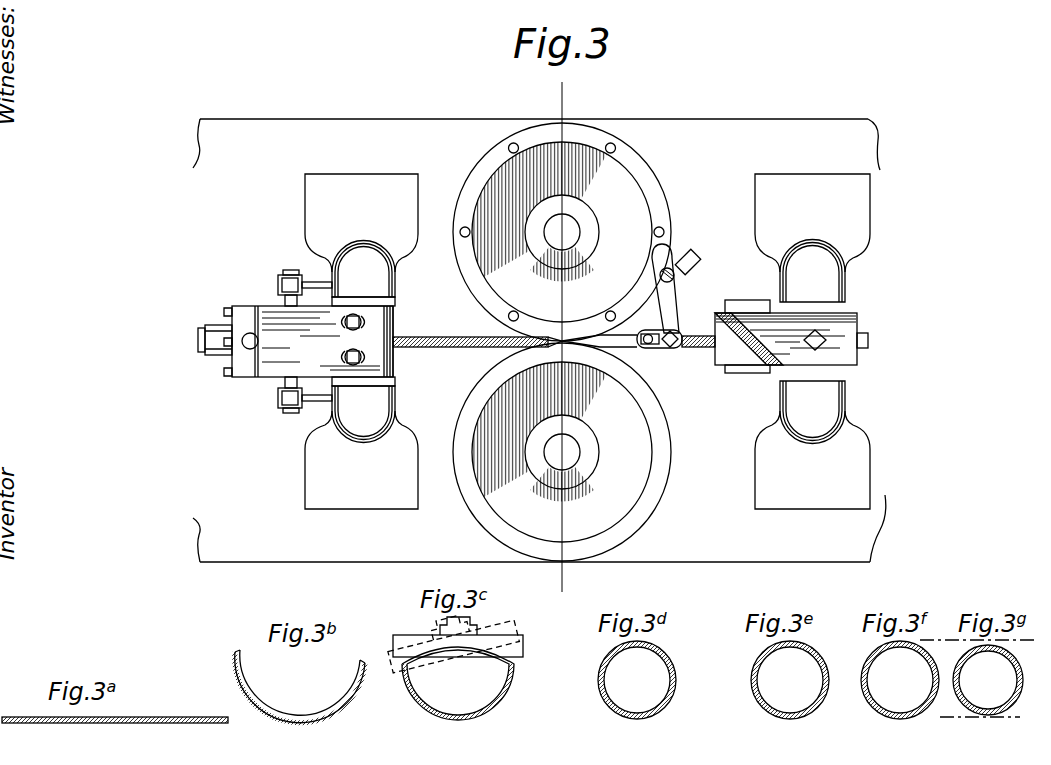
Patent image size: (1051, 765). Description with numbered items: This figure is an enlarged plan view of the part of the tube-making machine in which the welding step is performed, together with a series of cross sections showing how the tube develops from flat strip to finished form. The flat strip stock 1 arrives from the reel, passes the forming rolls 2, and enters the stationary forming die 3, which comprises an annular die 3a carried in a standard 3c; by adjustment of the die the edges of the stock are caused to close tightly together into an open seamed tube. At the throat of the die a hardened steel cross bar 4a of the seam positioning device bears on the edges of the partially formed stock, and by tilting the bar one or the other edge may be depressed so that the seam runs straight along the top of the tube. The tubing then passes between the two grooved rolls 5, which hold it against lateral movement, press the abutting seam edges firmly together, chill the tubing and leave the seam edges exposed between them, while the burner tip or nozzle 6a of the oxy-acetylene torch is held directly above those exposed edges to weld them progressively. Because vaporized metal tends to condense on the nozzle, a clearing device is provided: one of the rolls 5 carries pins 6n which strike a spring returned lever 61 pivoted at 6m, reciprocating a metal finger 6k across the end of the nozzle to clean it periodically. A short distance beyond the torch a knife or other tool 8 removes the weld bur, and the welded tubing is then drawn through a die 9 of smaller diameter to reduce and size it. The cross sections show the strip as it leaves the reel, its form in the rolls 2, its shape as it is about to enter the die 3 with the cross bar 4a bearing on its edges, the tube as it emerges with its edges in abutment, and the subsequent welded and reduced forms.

In FIG. 3, the flat strip stock 1 is at (210, 360).
In FIG. 3, the stationary forming die 3 is at (340, 341).
In FIG. 3, the annular die 3a is at (274, 372).
In FIG. 3, the standard 3c is at (330, 440).
In FIG. 3, the holding, pressing and chilling rolls 5 is at (660, 206).
In FIG. 3, the pins 6n is at (611, 153).
In FIG. 3, the pivot 6m is at (697, 258).
In FIG. 3, the spring returned lever 61 is at (673, 313).
In FIG. 3, the metal finger 6k is at (623, 343).
In FIG. 3, the burner tip or nozzle 6a is at (593, 352).
In FIG. 3, the knife or other tool 8 is at (745, 355).
In FIG. 3, the die 9 is at (812, 341).
In FIG. 3C, the cross bar 4a is at (508, 662).
In FIG. 3D, the forming rolls 2 is at (634, 646).